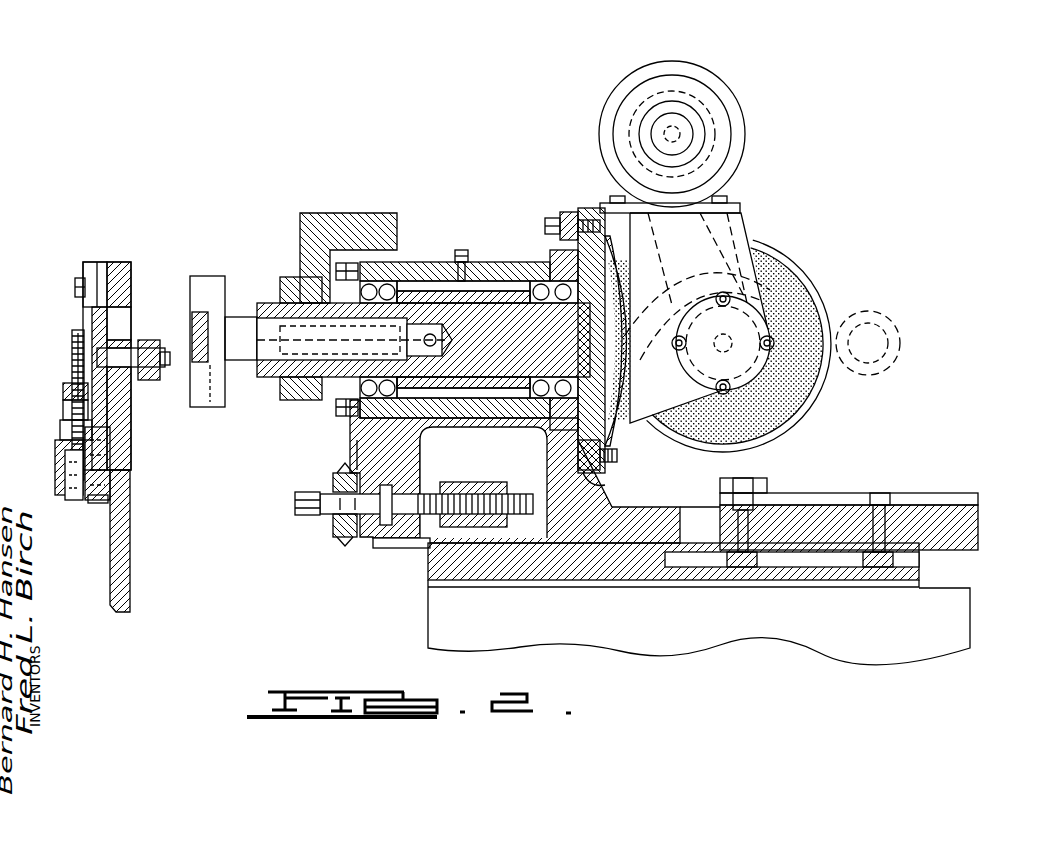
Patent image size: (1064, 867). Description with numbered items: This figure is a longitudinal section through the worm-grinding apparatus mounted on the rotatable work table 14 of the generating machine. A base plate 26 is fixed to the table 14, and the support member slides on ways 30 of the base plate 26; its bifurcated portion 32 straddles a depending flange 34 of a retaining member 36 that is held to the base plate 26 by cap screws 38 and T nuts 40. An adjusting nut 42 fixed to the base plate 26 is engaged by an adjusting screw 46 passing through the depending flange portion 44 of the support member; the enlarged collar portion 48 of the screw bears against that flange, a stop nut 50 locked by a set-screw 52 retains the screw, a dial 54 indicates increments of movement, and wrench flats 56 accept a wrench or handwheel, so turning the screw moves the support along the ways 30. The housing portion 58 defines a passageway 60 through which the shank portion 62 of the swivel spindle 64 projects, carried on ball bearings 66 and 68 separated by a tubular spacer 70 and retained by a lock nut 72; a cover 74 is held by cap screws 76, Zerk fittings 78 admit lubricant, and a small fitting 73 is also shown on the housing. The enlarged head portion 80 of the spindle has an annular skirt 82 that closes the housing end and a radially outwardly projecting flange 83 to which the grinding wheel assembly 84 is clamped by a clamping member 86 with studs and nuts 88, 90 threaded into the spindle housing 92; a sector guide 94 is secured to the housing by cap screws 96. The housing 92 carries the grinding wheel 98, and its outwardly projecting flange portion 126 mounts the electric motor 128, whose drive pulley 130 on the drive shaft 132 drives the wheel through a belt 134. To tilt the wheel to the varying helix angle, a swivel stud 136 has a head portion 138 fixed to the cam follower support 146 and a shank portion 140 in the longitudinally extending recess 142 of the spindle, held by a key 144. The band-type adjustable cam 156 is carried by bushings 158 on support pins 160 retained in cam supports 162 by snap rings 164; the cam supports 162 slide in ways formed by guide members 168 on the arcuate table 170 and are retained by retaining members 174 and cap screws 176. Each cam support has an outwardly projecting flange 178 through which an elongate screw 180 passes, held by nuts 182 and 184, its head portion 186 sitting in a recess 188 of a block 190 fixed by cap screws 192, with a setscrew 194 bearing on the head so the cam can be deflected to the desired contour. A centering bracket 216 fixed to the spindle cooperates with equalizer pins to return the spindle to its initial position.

The rotatable work table 14 is at (445, 610).
The base plate 26 is at (430, 570).
The ways 30 is at (608, 588).
The bifurcated portion 32 is at (700, 506).
The depending flange 34 is at (979, 532).
The retaining member 36 is at (994, 512).
The cap screws 38 is at (890, 535).
The T nuts 40 is at (882, 567).
The adjusting nut 42 is at (470, 482).
The depending flange portion 44 is at (400, 548).
The adjusting screw 46 is at (425, 495).
The enlarged collar portion 48 is at (388, 487).
The stop nut 50 is at (352, 537).
The set-screw 52 is at (335, 475).
The dial 54 is at (333, 528).
The wrench flats 56 is at (297, 502).
The housing portion 58 is at (482, 262).
The passageway 60 is at (405, 282).
The shank portion 62 is at (462, 352).
The swivel spindle 64 is at (510, 296).
The ball bearing 66 is at (372, 263).
The ball bearing 68 is at (545, 303).
The tubular spacer 70 is at (438, 292).
The lock nut 72 is at (355, 360).
The set screw 73 is at (462, 250).
The cover 74 is at (300, 262).
The cap screws 76 is at (355, 262).
The Zerk fittings 78 is at (355, 444).
The enlarged head portion 80 is at (622, 318).
The annular skirt 82 is at (578, 440).
The radially outwardly projecting flange 83 is at (620, 454).
The grinding wheel assembly 84 is at (770, 238).
The clamping member 86 is at (572, 212).
The stud 88 is at (588, 220).
The nut 90 is at (548, 217).
The spindle housing 92 is at (645, 238).
The sector guide 94 is at (605, 485).
The cap screws 96 is at (592, 468).
The grinding wheel 98 is at (805, 292).
The outwardly projecting flange portion 126 is at (742, 208).
The electric motor 128 is at (745, 82).
The drive pulley 130 is at (700, 100).
The drive shaft 132 is at (665, 112).
The belt 134 is at (730, 202).
The swivel stud 136 is at (240, 315).
The head portion 138 is at (210, 276).
The shank portion 140 is at (285, 390).
The longitudinally extending recess 142 is at (445, 360).
The key 144 is at (282, 292).
The cam follower support 146 is at (198, 320).
The adjustable cam 156 is at (122, 352).
The bushings 158 is at (195, 380).
The support pins 160 is at (72, 360).
The cam support 162 is at (92, 315).
The snap rings 164 is at (162, 336).
The guide members 168 is at (118, 262).
The arcuate table 170 is at (130, 592).
The retaining members 174 is at (90, 262).
The cap screws 176 is at (75, 285).
The outwardly projecting flange 178 is at (63, 408).
The elongate screw 180 is at (72, 340).
The nut 182 is at (63, 388).
The nut 184 is at (65, 428).
The head portion 186 is at (58, 460).
The recess 188 is at (65, 478).
The block 190 is at (95, 500).
The cap screws 192 is at (87, 496).
The setscrew 194 is at (92, 494).
The centering bracket 216 is at (335, 410).